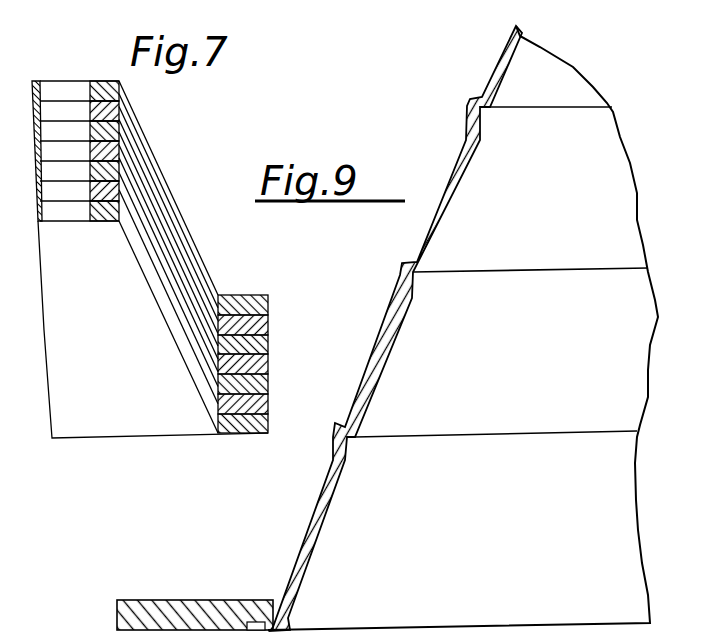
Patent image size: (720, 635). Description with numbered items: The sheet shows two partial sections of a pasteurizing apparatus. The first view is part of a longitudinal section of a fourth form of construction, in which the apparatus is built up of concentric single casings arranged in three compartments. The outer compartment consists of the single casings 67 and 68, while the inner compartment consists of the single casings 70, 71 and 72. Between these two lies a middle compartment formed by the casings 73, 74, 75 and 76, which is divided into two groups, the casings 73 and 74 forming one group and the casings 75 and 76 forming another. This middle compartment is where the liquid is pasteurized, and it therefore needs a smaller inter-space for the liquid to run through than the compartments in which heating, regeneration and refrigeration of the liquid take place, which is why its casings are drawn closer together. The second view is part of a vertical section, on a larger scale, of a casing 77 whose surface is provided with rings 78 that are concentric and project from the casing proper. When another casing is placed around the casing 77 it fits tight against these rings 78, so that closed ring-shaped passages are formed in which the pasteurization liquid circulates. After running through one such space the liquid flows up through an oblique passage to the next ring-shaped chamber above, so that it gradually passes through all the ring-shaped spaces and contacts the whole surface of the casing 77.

In FIG. 7, the single casing 67 is at (138, 128).
In FIG. 7, the single casing 68 is at (144, 162).
In FIG. 7, the casing 73 is at (146, 182).
In FIG. 7, the casing 74 is at (151, 200).
In FIG. 7, the casing 75 is at (154, 227).
In FIG. 7, the casing 76 is at (163, 252).
In FIG. 7, the single casing 72 is at (163, 270).
In FIG. 7, the single casing 71 is at (163, 292).
In FIG. 7, the single casing 70 is at (168, 320).
In FIG. 9, the casing 77 is at (572, 85).
In FIG. 9, the rings 78 is at (397, 275).